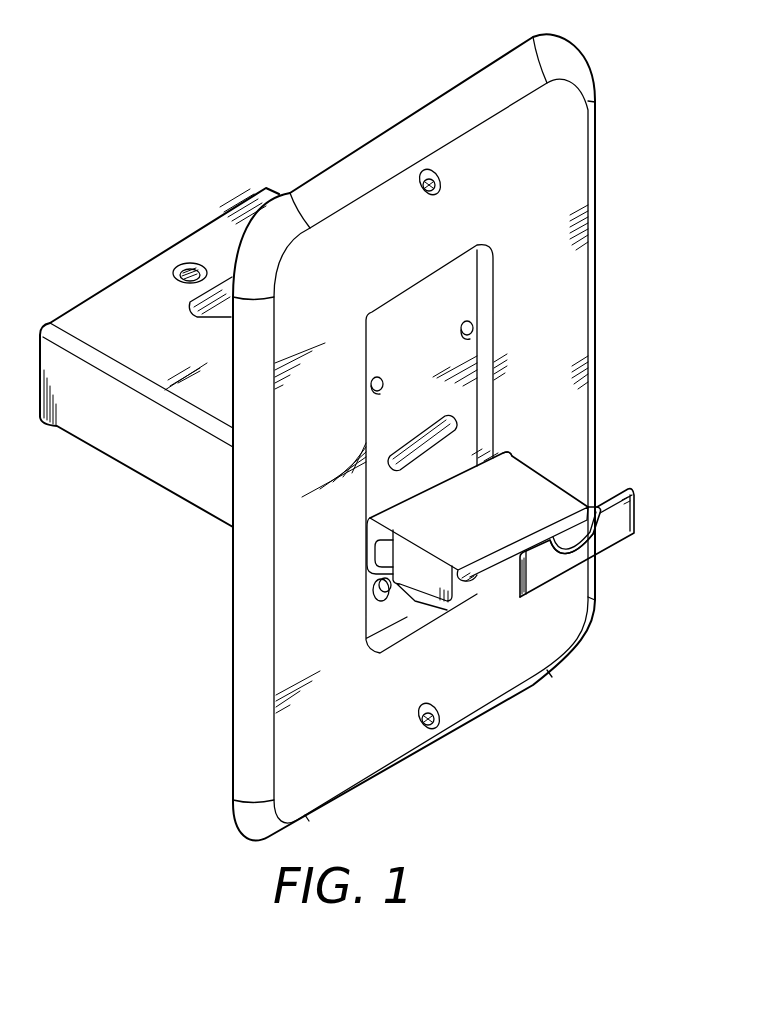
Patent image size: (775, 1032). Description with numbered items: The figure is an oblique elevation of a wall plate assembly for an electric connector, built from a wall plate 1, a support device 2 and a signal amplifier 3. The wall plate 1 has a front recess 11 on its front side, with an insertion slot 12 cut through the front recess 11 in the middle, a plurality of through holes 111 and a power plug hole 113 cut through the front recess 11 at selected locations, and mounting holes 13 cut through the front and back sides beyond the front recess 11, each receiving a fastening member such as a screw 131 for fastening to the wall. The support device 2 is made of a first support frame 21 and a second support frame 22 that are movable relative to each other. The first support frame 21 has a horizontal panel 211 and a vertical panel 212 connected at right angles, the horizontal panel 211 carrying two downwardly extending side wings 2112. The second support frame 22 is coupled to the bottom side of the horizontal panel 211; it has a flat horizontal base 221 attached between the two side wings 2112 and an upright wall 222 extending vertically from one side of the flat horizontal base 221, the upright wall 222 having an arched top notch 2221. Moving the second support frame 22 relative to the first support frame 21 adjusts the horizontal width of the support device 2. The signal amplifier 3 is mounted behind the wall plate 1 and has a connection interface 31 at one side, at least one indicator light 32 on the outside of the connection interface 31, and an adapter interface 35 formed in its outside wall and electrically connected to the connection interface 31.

The wall plate 1 is at (447, 437).
The front recess 11 is at (465, 275).
The through holes 111 is at (472, 321).
The power plug hole 113 is at (377, 607).
The insertion slot 12 is at (452, 416).
The mounting holes 13 is at (460, 186).
The screw 131 is at (437, 190).
The support device 2 is at (514, 548).
The first support frame 21 is at (482, 548).
The horizontal panel 211 is at (553, 497).
The side wings 2112 is at (415, 584).
The vertical panel 212 is at (387, 584).
The second support frame 22 is at (616, 543).
The flat horizontal base 221 is at (501, 582).
The upright wall 222 is at (628, 534).
The arched top notch 2221 is at (610, 540).
The signal amplifier 3 is at (293, 357).
The connection interface 31 is at (457, 437).
The indicator light 32 is at (475, 338).
The adapter interface 35 is at (187, 303).